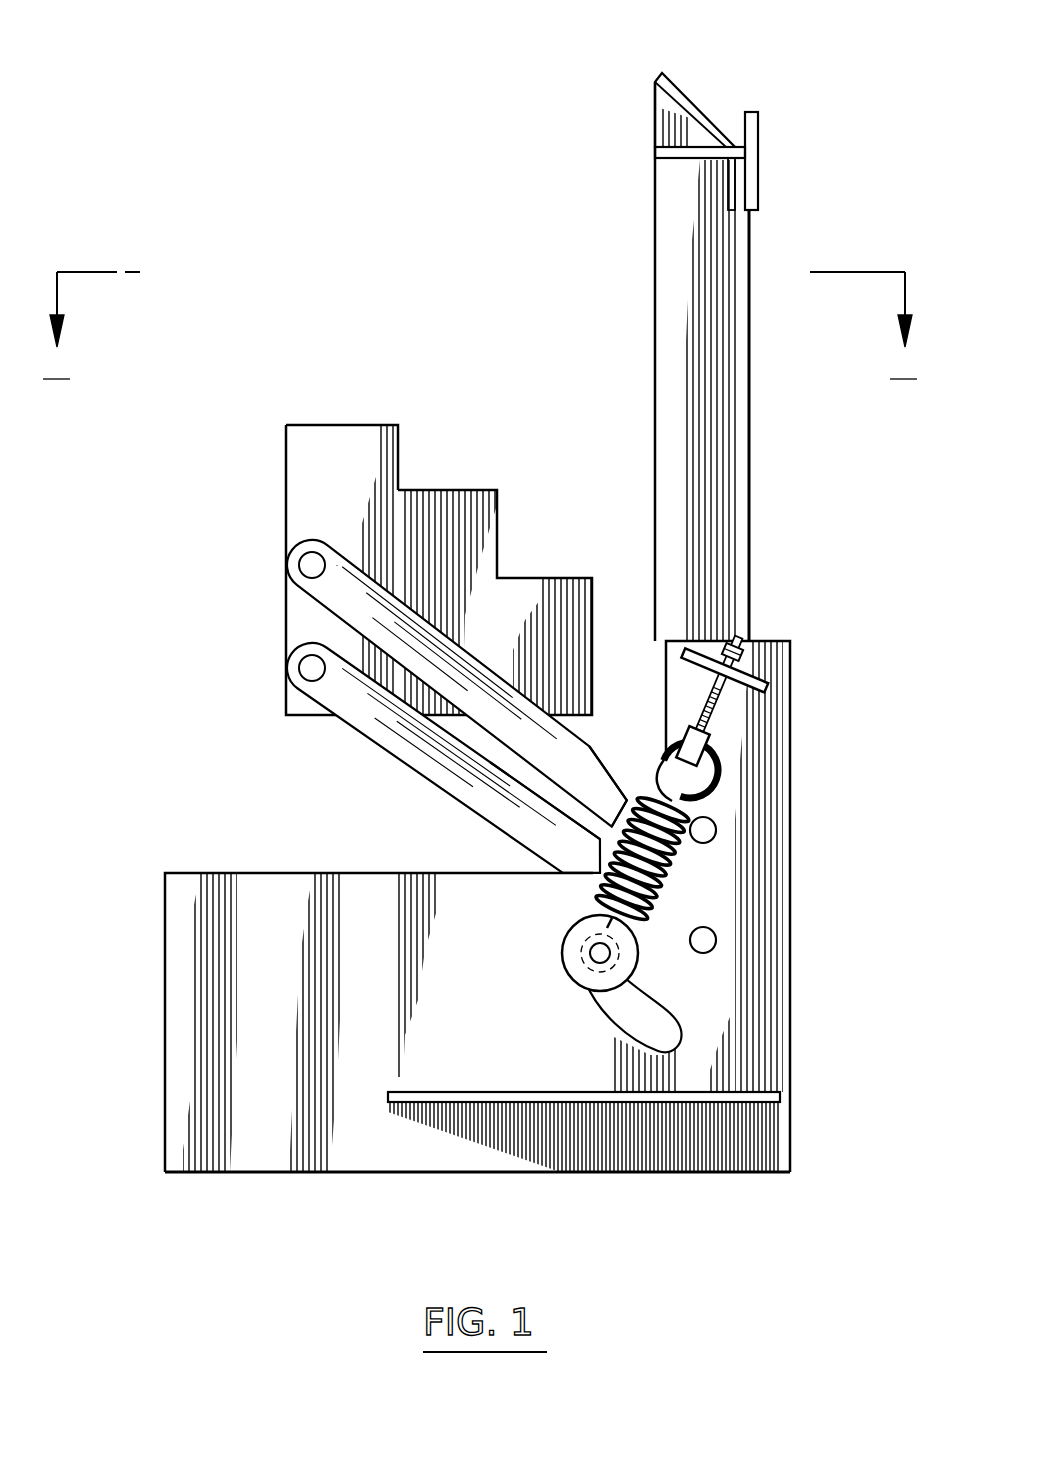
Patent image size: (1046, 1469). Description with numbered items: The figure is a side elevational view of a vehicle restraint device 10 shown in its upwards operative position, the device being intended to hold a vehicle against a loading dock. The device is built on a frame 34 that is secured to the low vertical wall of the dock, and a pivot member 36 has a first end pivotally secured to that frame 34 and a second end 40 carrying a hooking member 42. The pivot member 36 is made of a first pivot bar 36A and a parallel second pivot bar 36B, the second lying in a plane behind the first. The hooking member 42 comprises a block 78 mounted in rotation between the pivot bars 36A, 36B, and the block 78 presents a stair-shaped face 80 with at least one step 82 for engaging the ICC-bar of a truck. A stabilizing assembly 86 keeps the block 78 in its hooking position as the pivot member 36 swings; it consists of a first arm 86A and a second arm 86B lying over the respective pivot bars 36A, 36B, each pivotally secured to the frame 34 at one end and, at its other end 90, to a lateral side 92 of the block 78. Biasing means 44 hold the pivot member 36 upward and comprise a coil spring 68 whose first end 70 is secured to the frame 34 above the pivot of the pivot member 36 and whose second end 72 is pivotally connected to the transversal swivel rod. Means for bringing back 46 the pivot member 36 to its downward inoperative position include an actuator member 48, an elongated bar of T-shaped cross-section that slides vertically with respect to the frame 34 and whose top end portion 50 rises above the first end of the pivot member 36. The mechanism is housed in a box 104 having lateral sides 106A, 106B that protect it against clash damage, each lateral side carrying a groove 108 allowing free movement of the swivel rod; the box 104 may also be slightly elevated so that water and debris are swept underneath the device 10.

The restraint device 10 is at (291, 117).
The frame 34 is at (782, 1094).
The pivot member 36 is at (377, 778).
The first pivot bar 36A is at (446, 762).
The second pivot bar 36B is at (482, 801).
The second end 40 is at (290, 691).
The hooking member 42 is at (236, 509).
The biasing means 44 is at (676, 902).
The means for bringing back 46 is at (810, 553).
The actuator member 48 is at (751, 393).
The top end portion 50 is at (732, 80).
The coil spring 68 is at (672, 866).
The first end of coil spring 70 is at (715, 770).
The second end of coil spring 72 is at (597, 951).
The block 78 is at (340, 424).
The stair-shaped face 80 is at (522, 447).
The step 82 is at (450, 489).
The stabilizing assembly 86 is at (619, 707).
The first arm 86A is at (459, 678).
The second arm 86B is at (600, 796).
The second arm end 90 is at (297, 573).
The lateral side of block 92 is at (296, 522).
The box 104 is at (124, 1043).
The first lateral side 106A is at (322, 1206).
The second lateral side 106B is at (385, 1160).
The groove 108 is at (618, 1005).